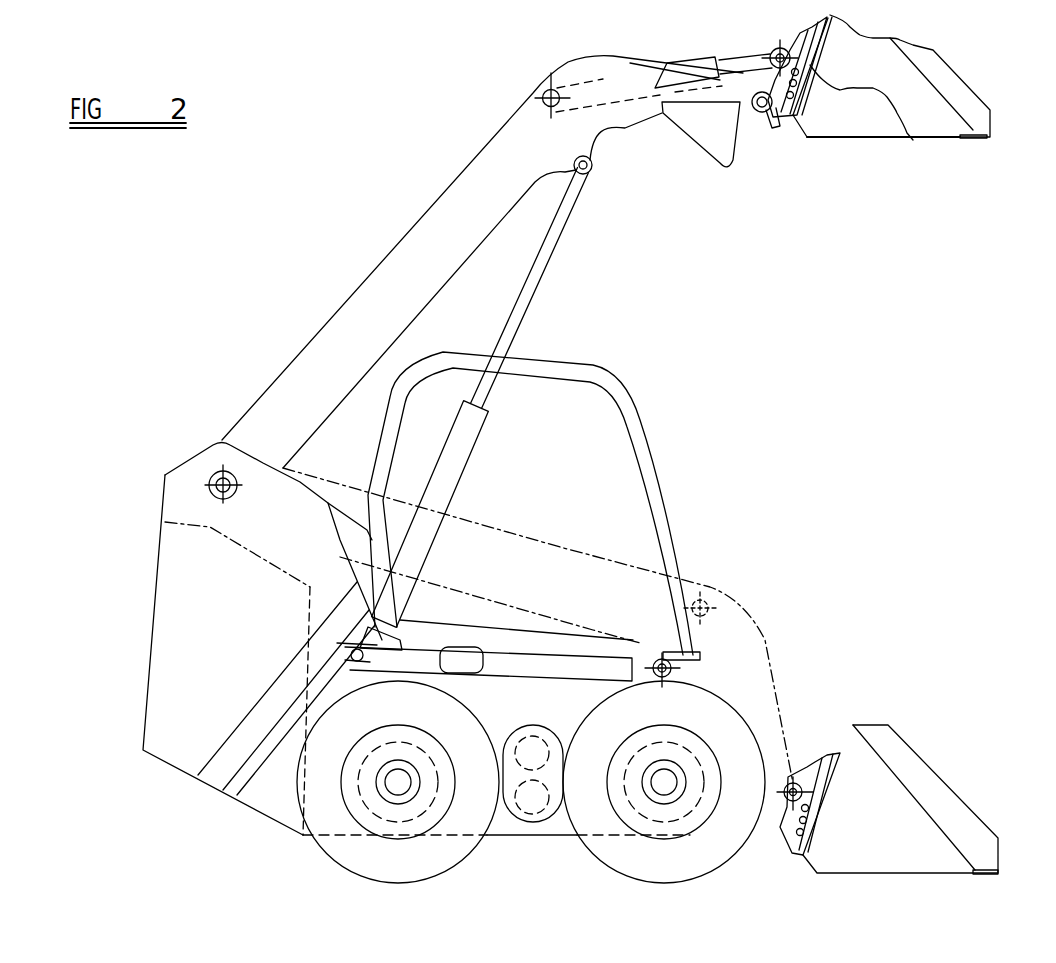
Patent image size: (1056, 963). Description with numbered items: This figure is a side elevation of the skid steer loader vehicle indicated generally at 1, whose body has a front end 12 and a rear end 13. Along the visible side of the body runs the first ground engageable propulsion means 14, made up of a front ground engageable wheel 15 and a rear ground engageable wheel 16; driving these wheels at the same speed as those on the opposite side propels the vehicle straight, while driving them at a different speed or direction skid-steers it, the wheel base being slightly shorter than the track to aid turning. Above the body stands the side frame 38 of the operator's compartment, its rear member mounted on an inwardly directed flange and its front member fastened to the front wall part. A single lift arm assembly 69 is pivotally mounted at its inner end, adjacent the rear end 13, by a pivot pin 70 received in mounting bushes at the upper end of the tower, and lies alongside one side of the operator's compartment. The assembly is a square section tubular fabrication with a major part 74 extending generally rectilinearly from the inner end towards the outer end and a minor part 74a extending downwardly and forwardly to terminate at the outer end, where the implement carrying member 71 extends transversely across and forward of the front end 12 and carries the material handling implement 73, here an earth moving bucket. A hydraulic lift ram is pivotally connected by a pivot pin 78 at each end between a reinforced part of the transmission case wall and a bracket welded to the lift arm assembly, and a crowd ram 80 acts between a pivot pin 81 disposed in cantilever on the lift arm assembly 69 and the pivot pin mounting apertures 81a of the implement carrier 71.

The loader 1 is at (765, 569).
The front end 12 is at (770, 860).
The rear end 13 is at (183, 810).
The first ground engageable propulsion means 14 is at (575, 855).
The front ground engageable wheel 15 is at (740, 850).
The rear ground engageable wheel 16 is at (330, 850).
The side frame 38 is at (652, 452).
The lift arm assembly 69 is at (474, 409).
The pivot pin 70 is at (218, 481).
The implement carrying member 71 is at (912, 138).
The material handling implement 73 is at (955, 86).
The major part 74 is at (330, 318).
The minor part 74a is at (661, 122).
The pivot pin 78 is at (590, 170).
The crowd ram 80 is at (668, 63).
The pivot pin 81 is at (543, 97).
The pivot pin mounting apertures 81a is at (780, 56).